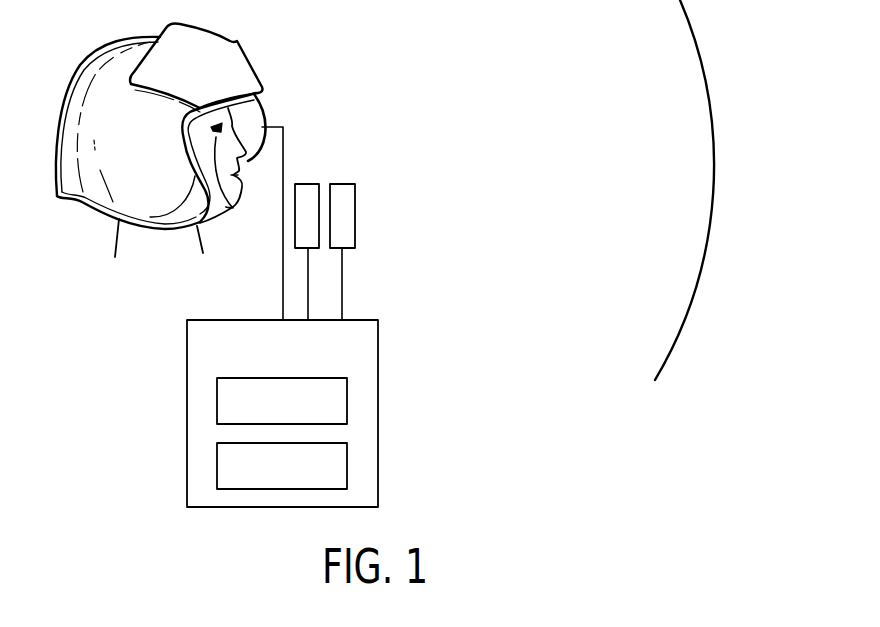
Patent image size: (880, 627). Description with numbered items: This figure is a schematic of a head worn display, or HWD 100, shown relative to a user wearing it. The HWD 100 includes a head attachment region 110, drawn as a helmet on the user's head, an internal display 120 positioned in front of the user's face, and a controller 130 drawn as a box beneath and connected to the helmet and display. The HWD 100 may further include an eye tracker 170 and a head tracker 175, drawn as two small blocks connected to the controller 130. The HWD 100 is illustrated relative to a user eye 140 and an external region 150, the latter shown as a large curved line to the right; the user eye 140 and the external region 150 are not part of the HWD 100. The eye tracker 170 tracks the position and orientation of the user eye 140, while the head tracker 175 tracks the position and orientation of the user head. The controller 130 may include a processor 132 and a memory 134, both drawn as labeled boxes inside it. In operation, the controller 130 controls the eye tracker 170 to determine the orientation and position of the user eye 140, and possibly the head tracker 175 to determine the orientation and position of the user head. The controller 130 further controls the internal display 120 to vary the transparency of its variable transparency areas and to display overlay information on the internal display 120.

The HWD 100 is at (362, 68).
The head attachment region 110 is at (98, 64).
The internal display 120 is at (258, 103).
The controller 130 is at (187, 339).
The processor 132 is at (347, 397).
The memory 134 is at (347, 462).
The user eye 140 is at (233, 209).
The external region 150 is at (708, 235).
The eye tracker 170 is at (355, 210).
The head tracker 175 is at (307, 183).